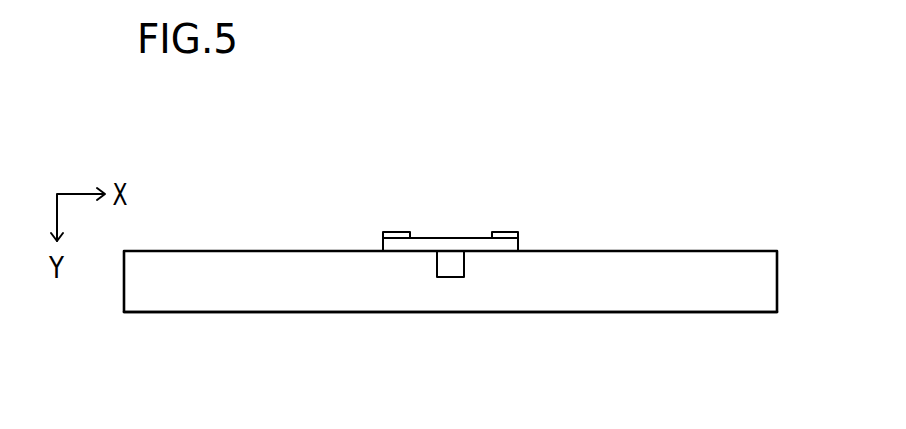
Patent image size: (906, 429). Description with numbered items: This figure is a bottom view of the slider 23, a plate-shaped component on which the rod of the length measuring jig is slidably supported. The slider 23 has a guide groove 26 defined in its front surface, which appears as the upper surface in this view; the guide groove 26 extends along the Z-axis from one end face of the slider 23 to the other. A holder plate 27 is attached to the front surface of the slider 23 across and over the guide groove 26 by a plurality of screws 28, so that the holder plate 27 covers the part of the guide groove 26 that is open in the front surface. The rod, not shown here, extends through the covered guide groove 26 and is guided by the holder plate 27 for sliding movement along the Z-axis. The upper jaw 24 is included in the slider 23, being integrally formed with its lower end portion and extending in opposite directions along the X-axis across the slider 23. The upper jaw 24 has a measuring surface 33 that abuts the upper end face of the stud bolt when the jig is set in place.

The slider 23 is at (450, 204).
The upper jaw 24 is at (186, 245).
The guide groove 26 is at (437, 270).
The holder plate 27 is at (454, 237).
The screws 28 is at (394, 232).
The measuring surface 33 is at (181, 305).